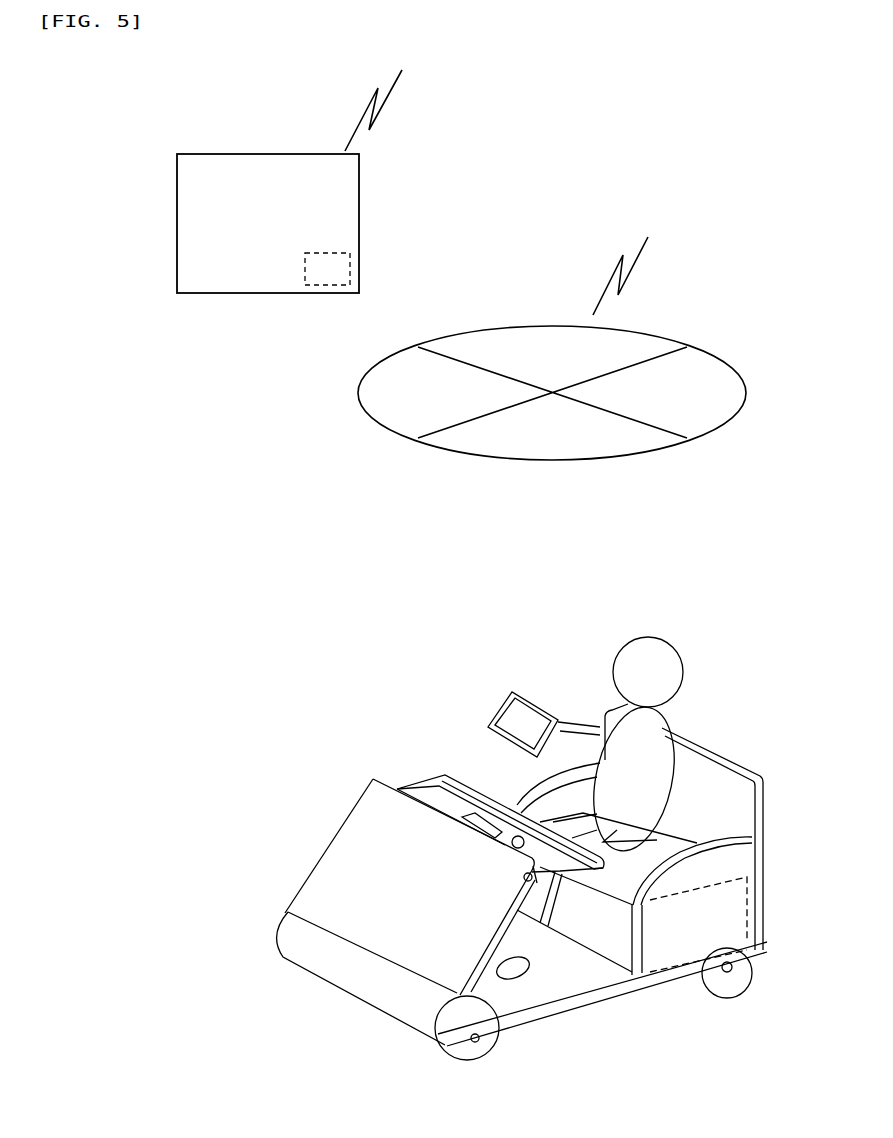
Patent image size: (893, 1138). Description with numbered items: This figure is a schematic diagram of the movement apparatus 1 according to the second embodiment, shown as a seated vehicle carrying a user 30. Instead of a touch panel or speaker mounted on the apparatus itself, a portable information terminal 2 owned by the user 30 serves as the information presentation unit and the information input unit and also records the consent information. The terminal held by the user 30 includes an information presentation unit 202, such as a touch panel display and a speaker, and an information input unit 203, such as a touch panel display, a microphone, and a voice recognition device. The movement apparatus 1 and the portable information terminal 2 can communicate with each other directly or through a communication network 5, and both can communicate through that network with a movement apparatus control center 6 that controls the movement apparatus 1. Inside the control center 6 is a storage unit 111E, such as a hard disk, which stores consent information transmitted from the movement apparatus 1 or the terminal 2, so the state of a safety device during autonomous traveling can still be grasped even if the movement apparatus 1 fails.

The movement apparatus 1 is at (532, 837).
The portable information terminal 2 is at (493, 708).
The communication network 5 is at (712, 354).
The movement apparatus control center 6 is at (238, 152).
The user 30 is at (675, 643).
The storage unit 111E is at (327, 253).
The information presentation unit 202 is at (500, 695).
The information input unit 203 is at (523, 724).